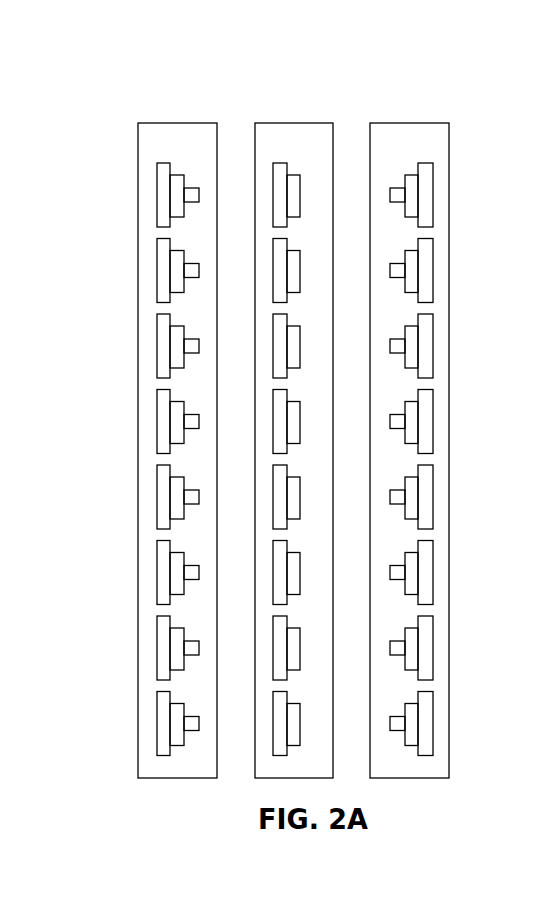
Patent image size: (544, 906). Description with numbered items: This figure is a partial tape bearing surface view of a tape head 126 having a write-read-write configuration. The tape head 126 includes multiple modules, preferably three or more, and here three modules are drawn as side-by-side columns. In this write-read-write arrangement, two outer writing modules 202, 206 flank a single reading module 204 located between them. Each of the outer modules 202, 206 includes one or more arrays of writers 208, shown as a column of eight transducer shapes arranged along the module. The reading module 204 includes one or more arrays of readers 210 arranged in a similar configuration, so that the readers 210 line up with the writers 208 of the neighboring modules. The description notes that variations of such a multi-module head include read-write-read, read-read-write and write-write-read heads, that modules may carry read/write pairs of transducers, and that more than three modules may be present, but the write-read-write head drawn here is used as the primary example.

The tape head 126 is at (98, 86).
The outer writing module 202 is at (170, 99).
The reading module 204 is at (295, 99).
The outer writing module 206 is at (403, 99).
The writers 208 is at (300, 343).
The readers 210 is at (433, 418).